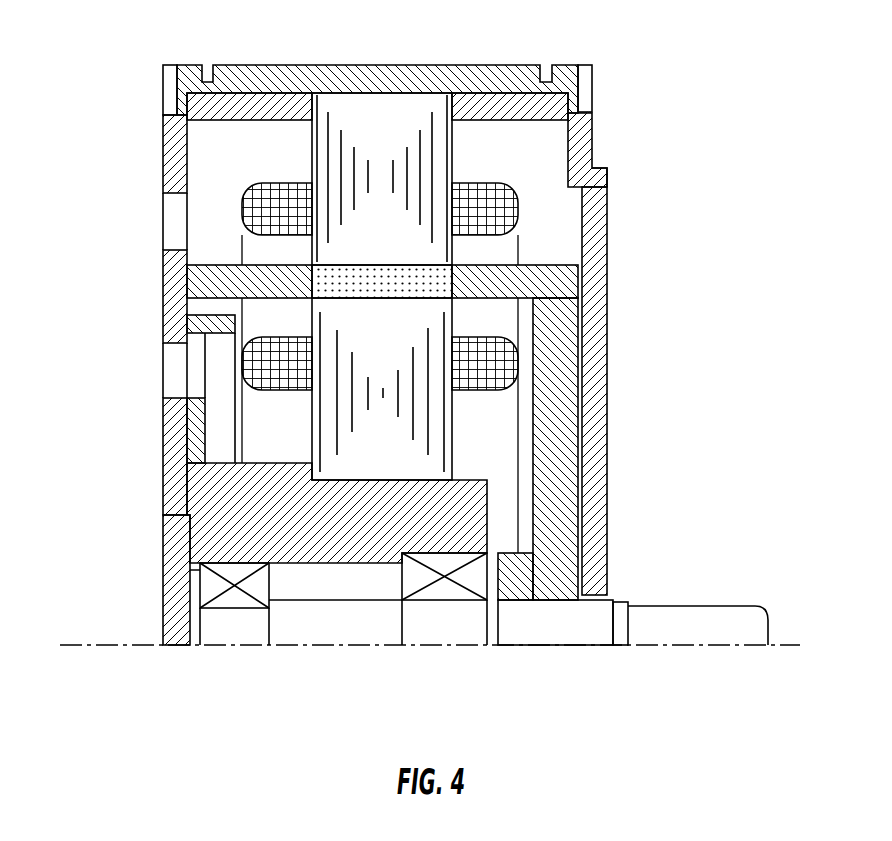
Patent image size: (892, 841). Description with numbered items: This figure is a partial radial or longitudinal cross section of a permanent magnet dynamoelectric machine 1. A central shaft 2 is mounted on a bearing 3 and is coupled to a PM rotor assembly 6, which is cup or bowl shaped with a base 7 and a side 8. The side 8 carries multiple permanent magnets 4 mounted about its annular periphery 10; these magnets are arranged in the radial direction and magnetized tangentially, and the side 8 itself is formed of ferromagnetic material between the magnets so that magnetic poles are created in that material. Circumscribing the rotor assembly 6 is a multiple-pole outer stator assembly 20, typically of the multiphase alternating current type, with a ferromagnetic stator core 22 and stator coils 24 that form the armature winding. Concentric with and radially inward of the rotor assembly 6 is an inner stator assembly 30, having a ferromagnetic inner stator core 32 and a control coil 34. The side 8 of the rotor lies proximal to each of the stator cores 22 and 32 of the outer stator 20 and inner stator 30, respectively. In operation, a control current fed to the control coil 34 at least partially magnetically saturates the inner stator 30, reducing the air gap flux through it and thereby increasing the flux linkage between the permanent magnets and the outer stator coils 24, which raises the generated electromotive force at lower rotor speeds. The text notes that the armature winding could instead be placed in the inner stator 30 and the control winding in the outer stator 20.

The permanent magnet dynamoelectric machine 1 is at (691, 104).
The central shaft 2 is at (686, 611).
The bearing 3 is at (212, 588).
The permanent magnets 4 is at (352, 273).
The PM rotor assembly 6 is at (555, 362).
The base 7 is at (562, 313).
The side 8 is at (260, 310).
The annular periphery 10 is at (310, 264).
The outer stator assembly 20 is at (393, 221).
The stator core 22 is at (392, 118).
The stator coils 24 is at (513, 195).
The inner stator assembly 30 is at (292, 427).
The inner stator core 32 is at (380, 443).
The control coil 34 is at (258, 358).